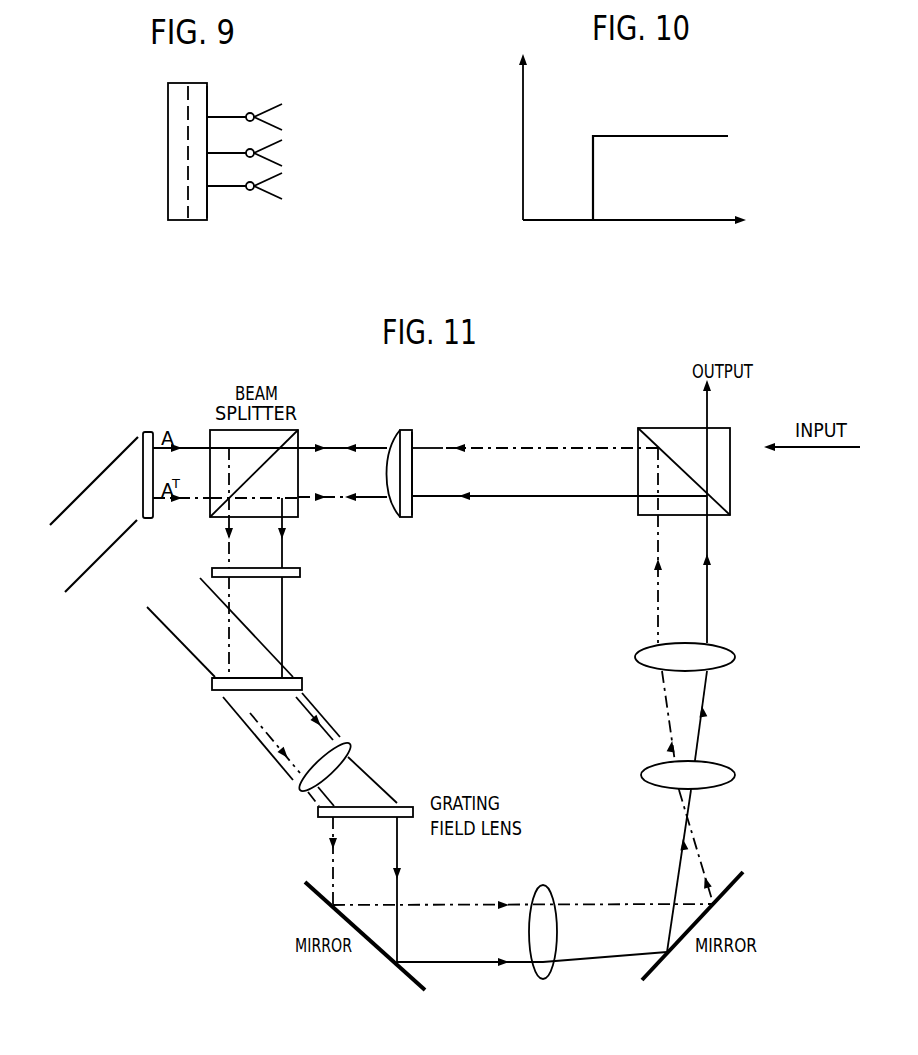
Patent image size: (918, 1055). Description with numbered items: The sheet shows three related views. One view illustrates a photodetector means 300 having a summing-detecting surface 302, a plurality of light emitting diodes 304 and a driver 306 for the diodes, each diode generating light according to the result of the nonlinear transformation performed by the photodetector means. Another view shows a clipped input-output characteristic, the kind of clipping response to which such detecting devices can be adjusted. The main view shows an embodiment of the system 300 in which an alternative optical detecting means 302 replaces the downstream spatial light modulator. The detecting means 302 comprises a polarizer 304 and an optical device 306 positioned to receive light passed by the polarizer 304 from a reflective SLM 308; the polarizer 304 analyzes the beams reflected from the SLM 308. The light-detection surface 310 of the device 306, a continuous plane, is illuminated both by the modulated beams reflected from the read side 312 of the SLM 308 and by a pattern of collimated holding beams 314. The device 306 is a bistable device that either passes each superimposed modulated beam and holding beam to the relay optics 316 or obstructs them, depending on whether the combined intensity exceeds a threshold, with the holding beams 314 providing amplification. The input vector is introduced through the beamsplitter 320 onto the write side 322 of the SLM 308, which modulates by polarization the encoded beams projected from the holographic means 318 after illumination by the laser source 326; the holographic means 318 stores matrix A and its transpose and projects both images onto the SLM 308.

In FIG. 9, the system 300 is at (238, 97).
In FIG. 11, the system 300 is at (517, 431).
In FIG. 9, the optical detecting means 302 is at (168, 124).
In FIG. 11, the optical detecting means 302 is at (275, 645).
In FIG. 9, the polarizer 304 is at (258, 114).
In FIG. 11, the polarizer 304 is at (293, 578).
In FIG. 9, the optical device 306 is at (200, 200).
In FIG. 11, the optical device 306 is at (213, 686).
In FIG. 11, the reflective SLM 308 is at (400, 480).
In FIG. 11, the light-detection surface 310 is at (215, 677).
In FIG. 11, the read side 312 is at (387, 474).
In FIG. 11, the holding beams 314 is at (166, 627).
In FIG. 11, the relay optics 316 is at (622, 662).
In FIG. 11, the holographic means 318 is at (150, 520).
In FIG. 11, the beamsplitter 320 is at (667, 425).
In FIG. 11, the write side 322 is at (412, 478).
In FIG. 11, the laser source 326 is at (90, 572).